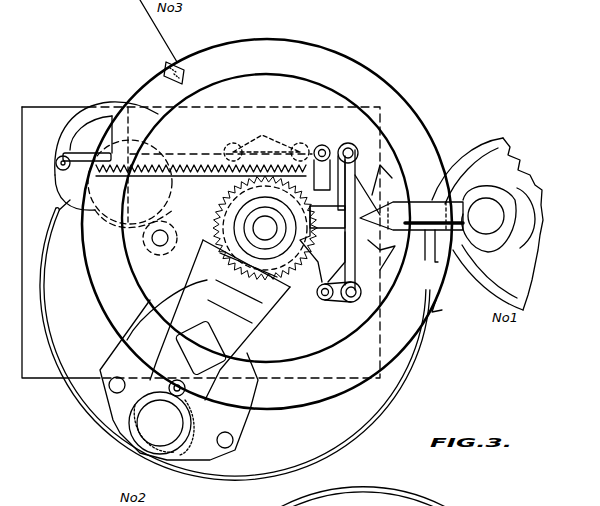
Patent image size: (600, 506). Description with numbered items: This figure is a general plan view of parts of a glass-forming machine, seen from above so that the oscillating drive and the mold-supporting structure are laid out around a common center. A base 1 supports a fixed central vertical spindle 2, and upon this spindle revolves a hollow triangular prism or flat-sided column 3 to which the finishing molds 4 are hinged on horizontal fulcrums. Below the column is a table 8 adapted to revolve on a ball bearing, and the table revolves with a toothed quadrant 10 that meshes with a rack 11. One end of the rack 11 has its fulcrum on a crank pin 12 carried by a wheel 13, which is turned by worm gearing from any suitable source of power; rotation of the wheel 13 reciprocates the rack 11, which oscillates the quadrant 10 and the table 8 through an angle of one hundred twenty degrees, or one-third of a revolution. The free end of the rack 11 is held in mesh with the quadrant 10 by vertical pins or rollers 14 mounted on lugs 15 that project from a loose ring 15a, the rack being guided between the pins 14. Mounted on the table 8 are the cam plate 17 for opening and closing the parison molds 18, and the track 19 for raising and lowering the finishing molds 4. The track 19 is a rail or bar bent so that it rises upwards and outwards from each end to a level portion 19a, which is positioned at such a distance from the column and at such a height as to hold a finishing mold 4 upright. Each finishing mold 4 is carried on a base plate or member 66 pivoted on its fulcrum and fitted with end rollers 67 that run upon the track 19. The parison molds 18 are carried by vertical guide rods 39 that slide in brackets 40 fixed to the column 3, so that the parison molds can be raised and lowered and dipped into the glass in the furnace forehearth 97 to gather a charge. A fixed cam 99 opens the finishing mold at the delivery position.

The base 1 is at (42, 378).
The central vertical spindle 2 is at (265, 228).
The hollow triangular prism or flat-sided column 3 is at (222, 232).
The finishing molds 4 is at (165, 462).
The table 8 is at (420, 153).
The toothed quadrant 10 is at (220, 214).
The rack 11 is at (204, 173).
The crank pin 12 is at (56, 178).
The wheel 13 is at (105, 100).
The vertical pins or rollers 14 is at (233, 144).
The lugs 15 is at (292, 150).
The loose ring 15a is at (324, 293).
The cam plate 17 is at (318, 90).
The parison molds 18 is at (485, 235).
The track 19 is at (345, 441).
The level portion 19a is at (130, 457).
The vertical guide rods 39 is at (360, 150).
The brackets 40 is at (342, 208).
The base plate or member 66 is at (236, 425).
The end rollers 67 is at (146, 468).
The furnace forehearth 97 is at (500, 180).
The fixed cam 99 is at (436, 308).